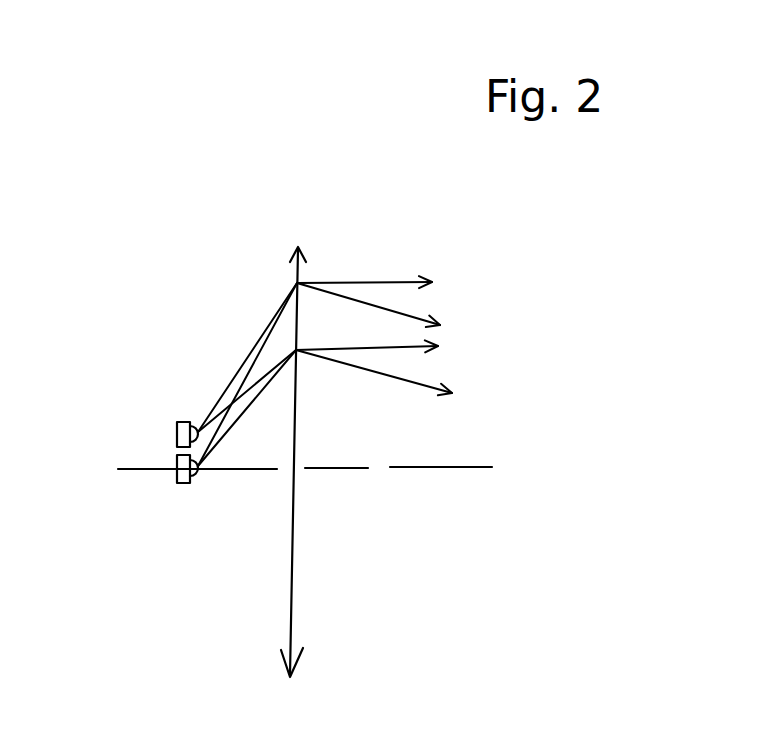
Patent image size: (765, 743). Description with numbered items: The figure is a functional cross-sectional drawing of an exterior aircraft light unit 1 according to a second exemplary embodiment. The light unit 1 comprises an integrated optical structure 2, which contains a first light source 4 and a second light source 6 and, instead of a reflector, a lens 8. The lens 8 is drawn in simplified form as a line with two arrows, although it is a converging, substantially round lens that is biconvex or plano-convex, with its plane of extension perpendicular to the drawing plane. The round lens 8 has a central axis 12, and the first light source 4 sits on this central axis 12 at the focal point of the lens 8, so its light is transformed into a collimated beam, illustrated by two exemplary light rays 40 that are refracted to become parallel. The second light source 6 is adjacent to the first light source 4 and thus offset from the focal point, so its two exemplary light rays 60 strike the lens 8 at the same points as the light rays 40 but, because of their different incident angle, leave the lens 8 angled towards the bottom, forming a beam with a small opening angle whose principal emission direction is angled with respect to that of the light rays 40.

The exterior aircraft light unit 1 is at (555, 282).
The integrated optical structure 2 is at (158, 545).
The first light source 4 is at (178, 472).
The second light source 6 is at (177, 426).
The lens 8 is at (291, 607).
The central axis 12 is at (472, 470).
The light rays 40 is at (338, 277).
The light rays 60 is at (335, 298).